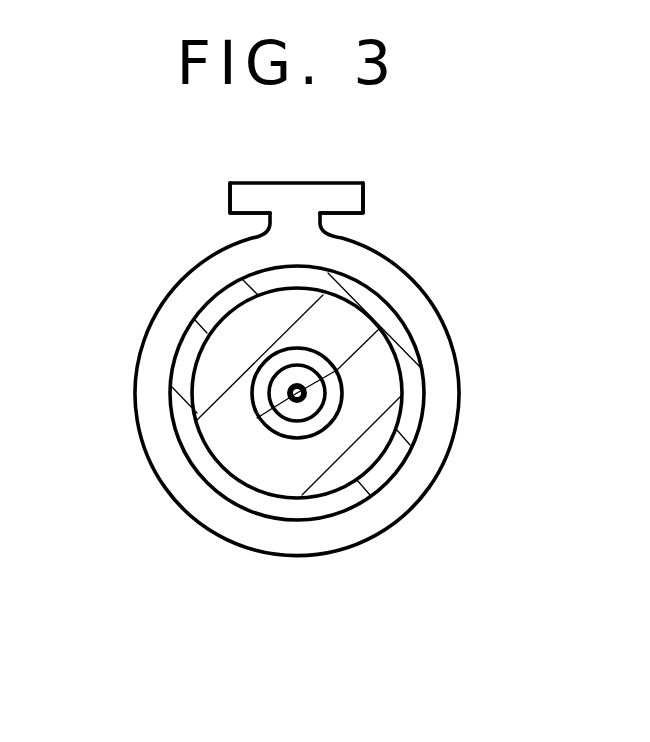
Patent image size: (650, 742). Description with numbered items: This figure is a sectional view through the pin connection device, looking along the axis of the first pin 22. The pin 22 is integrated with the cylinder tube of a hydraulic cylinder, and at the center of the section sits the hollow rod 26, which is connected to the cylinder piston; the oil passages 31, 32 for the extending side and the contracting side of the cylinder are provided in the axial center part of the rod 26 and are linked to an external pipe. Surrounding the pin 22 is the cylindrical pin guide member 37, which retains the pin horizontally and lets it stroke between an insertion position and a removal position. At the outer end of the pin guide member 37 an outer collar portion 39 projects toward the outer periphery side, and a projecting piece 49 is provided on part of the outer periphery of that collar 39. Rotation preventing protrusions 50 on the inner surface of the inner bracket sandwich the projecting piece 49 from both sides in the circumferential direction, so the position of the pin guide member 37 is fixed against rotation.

The first pin 22 is at (367, 453).
The hollow rod 26 is at (296, 421).
The oil passage 31 is at (310, 393).
The oil passage 32 is at (257, 418).
The pin guide member 37 is at (170, 420).
The outer collar portion 39 is at (426, 292).
The projecting piece 49 is at (288, 183).
The rotation preventing protrusions 50 is at (242, 183).